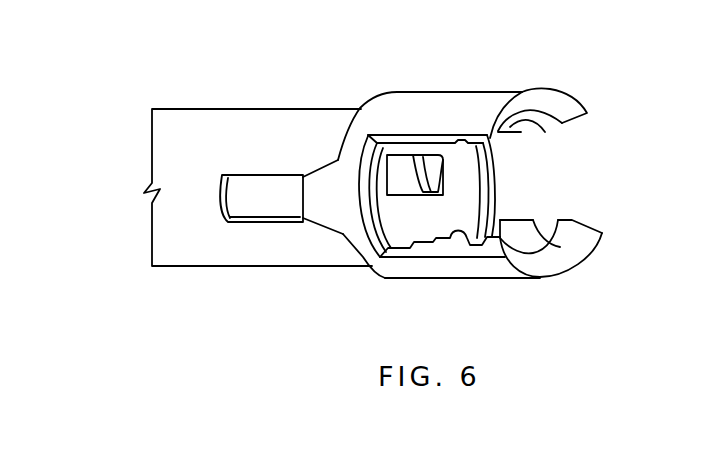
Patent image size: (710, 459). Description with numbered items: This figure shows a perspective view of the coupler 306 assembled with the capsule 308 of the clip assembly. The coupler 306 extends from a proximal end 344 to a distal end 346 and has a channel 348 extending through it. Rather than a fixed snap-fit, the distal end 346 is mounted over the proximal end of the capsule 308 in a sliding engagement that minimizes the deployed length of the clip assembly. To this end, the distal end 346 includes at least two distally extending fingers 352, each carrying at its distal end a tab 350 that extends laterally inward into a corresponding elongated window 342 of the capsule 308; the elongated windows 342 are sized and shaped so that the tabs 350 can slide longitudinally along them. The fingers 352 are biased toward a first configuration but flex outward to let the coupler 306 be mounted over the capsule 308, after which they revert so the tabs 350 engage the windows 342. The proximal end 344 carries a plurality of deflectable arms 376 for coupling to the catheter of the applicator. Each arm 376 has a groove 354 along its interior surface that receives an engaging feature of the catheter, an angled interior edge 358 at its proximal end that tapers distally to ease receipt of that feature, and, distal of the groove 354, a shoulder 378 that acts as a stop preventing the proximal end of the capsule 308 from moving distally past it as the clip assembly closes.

The coupler 306 is at (576, 94).
The capsule 308 is at (208, 129).
The elongated window 342 is at (260, 187).
The proximal end 344 is at (567, 247).
The distal end 346 is at (342, 190).
The channel 348 is at (553, 167).
The tab 350 is at (417, 157).
The finger 352 is at (313, 200).
The groove 354 is at (452, 238).
The angled interior edge 358 is at (570, 122).
The deflectable arm 376 is at (465, 91).
The shoulder 378 is at (403, 245).